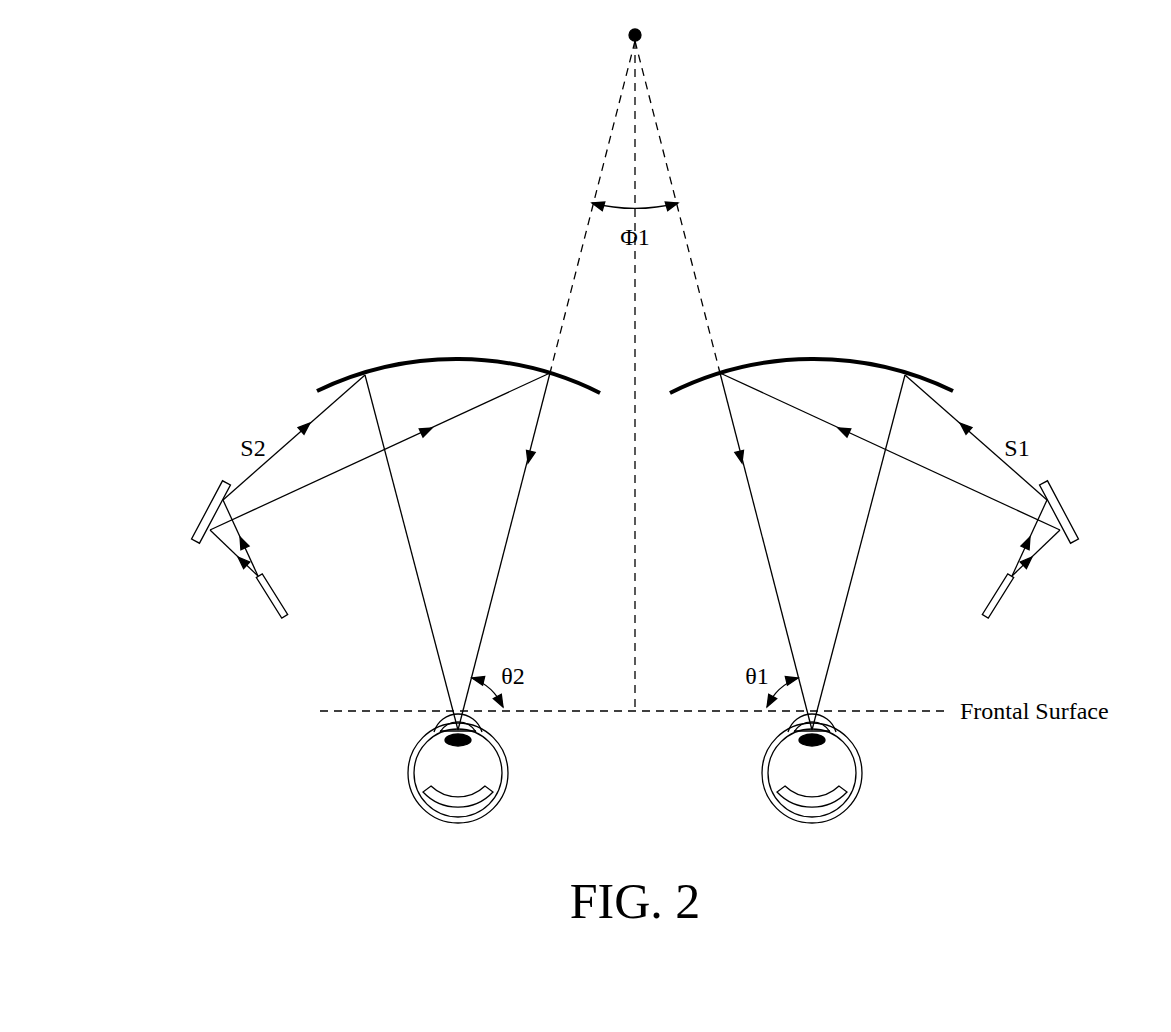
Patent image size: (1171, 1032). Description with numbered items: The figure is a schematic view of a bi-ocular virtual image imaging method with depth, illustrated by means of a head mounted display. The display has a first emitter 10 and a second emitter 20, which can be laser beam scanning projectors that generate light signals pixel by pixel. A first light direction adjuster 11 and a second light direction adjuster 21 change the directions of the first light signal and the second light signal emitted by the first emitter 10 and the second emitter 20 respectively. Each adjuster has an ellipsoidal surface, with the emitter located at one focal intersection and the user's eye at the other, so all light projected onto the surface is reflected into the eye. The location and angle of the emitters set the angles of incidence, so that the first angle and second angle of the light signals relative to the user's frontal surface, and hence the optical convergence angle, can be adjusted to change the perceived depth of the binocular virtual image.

The first emitter 10 is at (1004, 601).
The first light direction adjuster 11 is at (927, 380).
The second emitter 20 is at (266, 601).
The second light direction adjuster 21 is at (343, 380).